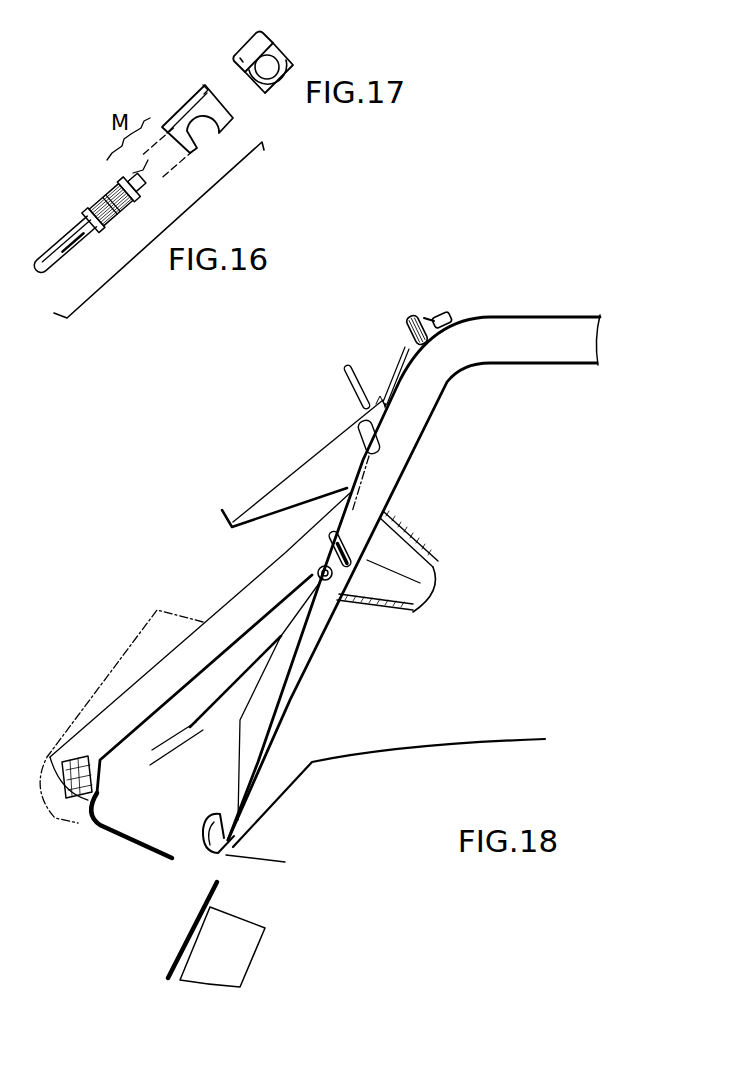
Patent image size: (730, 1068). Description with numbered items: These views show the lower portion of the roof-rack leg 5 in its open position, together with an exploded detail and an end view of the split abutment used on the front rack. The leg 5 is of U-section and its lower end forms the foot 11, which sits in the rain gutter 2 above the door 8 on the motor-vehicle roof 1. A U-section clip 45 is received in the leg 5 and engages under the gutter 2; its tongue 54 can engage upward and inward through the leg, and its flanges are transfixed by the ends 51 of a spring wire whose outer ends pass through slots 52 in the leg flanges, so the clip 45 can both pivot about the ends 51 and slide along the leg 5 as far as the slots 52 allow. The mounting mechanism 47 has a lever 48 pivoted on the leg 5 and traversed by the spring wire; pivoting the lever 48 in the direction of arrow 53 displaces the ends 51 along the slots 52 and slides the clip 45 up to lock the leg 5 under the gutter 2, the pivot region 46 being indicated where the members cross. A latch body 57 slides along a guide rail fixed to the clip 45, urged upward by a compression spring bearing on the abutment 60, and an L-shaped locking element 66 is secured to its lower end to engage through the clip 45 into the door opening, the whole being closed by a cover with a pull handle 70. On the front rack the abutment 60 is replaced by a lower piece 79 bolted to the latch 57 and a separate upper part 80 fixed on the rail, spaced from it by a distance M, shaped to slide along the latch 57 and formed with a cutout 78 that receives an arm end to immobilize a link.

In FIG. 18, the motor-vehicle roof 1 is at (410, 750).
In FIG. 18, the rain gutter 2 is at (210, 857).
In FIG. 18, the leg 5 is at (416, 421).
In FIG. 18, the door 8 is at (238, 947).
In FIG. 18, the foot 11 is at (243, 800).
In FIG. 18, the clip 45 is at (235, 647).
In FIG. 18, the pivot 46 is at (318, 571).
In FIG. 18, the mounting mechanism 47 is at (320, 434).
In FIG. 18, the lever 48 is at (305, 482).
In FIG. 18, the ends of spring wire 51 is at (328, 581).
In FIG. 18, the slots 52 is at (352, 545).
In FIG. 18, the arrow 53 is at (232, 527).
In FIG. 18, the tongue 54 is at (203, 742).
In FIG. 18, the latch body 57 is at (118, 728).
In FIG. 16, the abutment 60 is at (101, 170).
In FIG. 18, the L-shaped locking element 66 is at (137, 840).
In FIG. 18, the pull handle 70 is at (137, 660).
In FIG. 16, the cutout 78 is at (220, 135).
In FIG. 16, the lower piece 79 is at (86, 209).
In FIG. 16, the upper part 80 is at (201, 91).
In FIG. 17, the upper part 80 is at (292, 64).